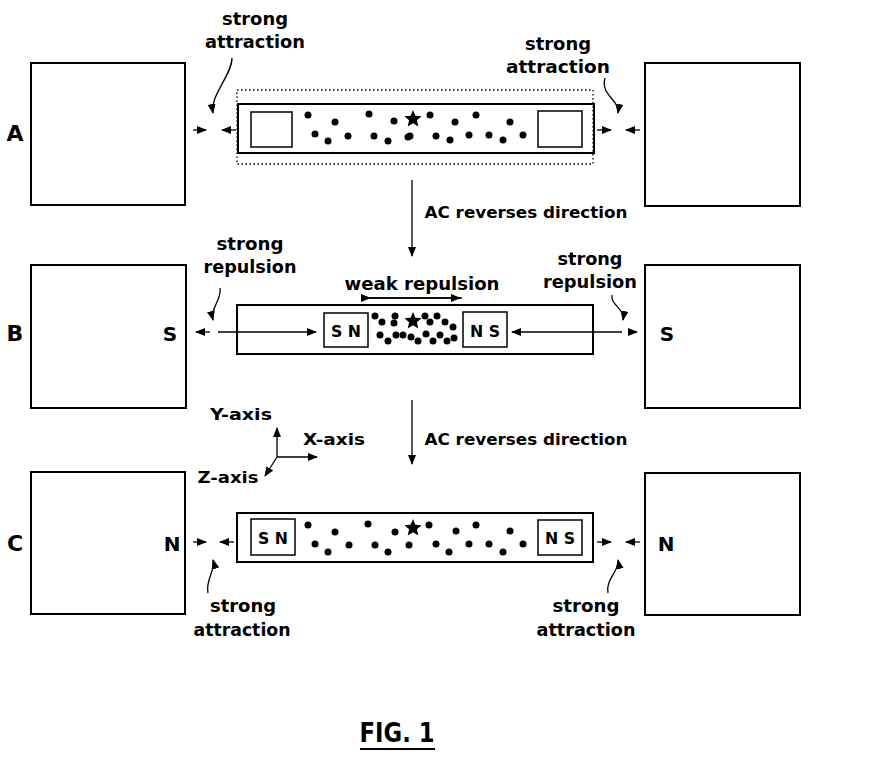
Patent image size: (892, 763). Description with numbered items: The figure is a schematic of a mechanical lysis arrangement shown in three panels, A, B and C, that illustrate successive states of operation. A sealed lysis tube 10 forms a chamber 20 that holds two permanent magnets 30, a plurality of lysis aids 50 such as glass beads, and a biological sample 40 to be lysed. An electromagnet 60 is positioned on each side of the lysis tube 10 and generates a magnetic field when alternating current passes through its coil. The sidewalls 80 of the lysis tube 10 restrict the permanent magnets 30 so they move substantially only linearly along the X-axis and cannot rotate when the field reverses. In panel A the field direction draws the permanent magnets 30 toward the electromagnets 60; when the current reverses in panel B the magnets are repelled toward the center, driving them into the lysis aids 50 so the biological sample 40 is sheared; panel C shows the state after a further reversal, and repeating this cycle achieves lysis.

The lysis tube 10 is at (298, 154).
The chamber 20 is at (365, 145).
The permanent magnet 30 is at (275, 112).
The biological sample 40 is at (418, 115).
The lysis aids 50 is at (372, 112).
The electromagnet 60 is at (127, 85).
The sidewalls 80 is at (355, 91).